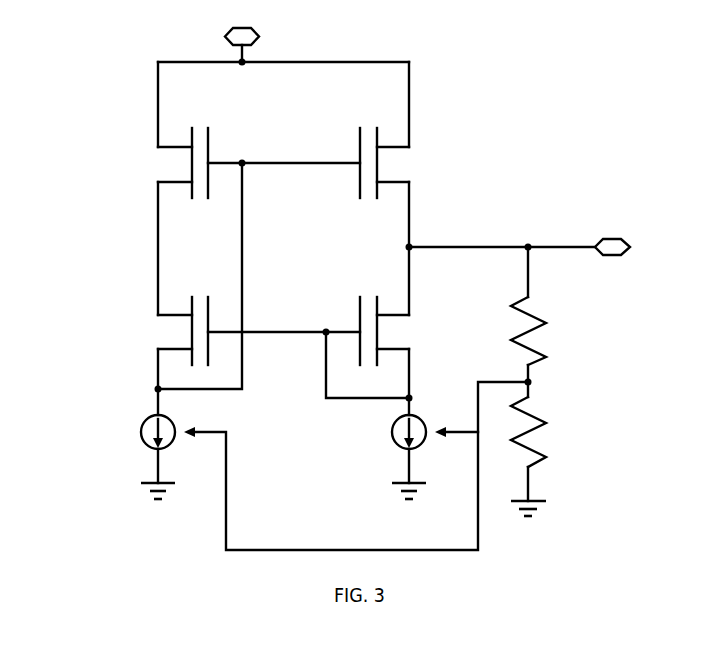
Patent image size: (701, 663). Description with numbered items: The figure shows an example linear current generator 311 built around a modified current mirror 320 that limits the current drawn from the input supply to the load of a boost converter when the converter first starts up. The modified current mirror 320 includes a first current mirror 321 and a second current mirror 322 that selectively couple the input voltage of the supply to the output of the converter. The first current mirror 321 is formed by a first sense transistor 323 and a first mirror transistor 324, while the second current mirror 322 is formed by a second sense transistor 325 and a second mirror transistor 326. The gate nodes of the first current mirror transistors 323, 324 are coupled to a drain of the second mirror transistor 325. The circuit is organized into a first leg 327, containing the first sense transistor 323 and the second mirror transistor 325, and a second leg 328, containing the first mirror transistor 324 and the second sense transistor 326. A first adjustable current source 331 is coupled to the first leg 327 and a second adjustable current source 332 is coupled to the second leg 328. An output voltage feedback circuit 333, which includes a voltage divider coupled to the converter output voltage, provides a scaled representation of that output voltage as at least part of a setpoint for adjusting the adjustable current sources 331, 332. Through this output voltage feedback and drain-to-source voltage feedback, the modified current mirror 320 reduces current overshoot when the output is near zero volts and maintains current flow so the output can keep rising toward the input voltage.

The linear current generator 311 is at (524, 40).
The modified current mirror 320 is at (62, 209).
The first current mirror 321 is at (127, 135).
The second current mirror 322 is at (124, 325).
The first sense transistor 323 is at (210, 152).
The first mirror transistor 324 is at (358, 135).
The second mirror transistor 325 is at (208, 308).
The second sense transistor 326 is at (358, 305).
The first leg 327 is at (157, 44).
The second leg 328 is at (409, 47).
The first adjustable current source 331 is at (141, 433).
The second adjustable current source 332 is at (393, 432).
The output voltage feedback circuit 333 is at (605, 363).